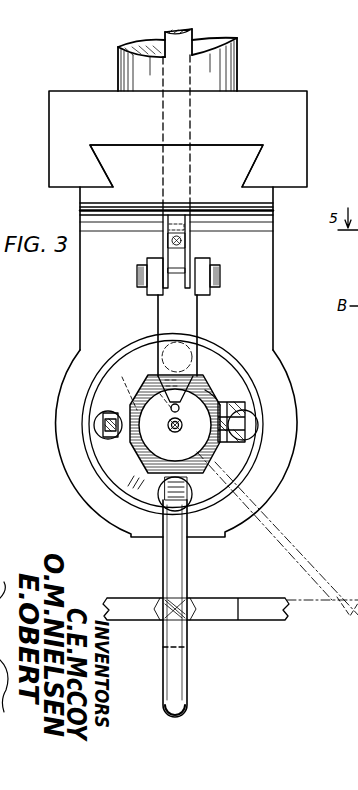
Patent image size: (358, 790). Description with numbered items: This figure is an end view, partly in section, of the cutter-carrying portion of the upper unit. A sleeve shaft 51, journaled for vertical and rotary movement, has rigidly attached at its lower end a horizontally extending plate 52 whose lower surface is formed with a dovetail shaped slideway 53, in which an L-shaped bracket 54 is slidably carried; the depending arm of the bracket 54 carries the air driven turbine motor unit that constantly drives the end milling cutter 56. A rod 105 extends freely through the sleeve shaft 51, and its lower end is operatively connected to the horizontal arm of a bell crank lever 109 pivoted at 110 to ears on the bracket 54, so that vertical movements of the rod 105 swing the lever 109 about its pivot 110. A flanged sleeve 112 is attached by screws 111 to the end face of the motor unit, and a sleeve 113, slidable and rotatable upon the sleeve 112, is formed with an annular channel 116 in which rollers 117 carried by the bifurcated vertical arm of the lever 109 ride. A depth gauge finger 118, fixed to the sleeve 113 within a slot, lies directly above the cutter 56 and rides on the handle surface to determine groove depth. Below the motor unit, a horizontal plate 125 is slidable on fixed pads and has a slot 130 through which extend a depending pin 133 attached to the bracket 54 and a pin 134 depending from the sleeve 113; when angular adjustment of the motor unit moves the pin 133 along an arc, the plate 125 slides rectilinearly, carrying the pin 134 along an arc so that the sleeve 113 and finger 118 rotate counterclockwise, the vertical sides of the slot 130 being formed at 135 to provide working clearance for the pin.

The rod 105 is at (192, 37).
The sleeve shaft 51 is at (128, 64).
The horizontally extending plate 52 is at (274, 98).
The dovetail shaped slideway 53 is at (104, 157).
The L-shaped bracket 54 is at (264, 288).
The bell crank lever 109 is at (178, 260).
The pivot 110 is at (138, 275).
The depth gauge finger 118 is at (160, 396).
The annular channel 116 is at (215, 408).
The screws 111 is at (100, 421).
The rollers 117 is at (235, 445).
The flanged sleeve 112 is at (228, 468).
The end milling cutter 56 is at (173, 432).
The sleeve 113 is at (197, 457).
The horizontal plate 125 is at (135, 598).
The slot 130 is at (165, 600).
The clearance sides of slot 135 is at (197, 612).
The depending pin 133 is at (190, 662).
The pin 134 is at (165, 680).